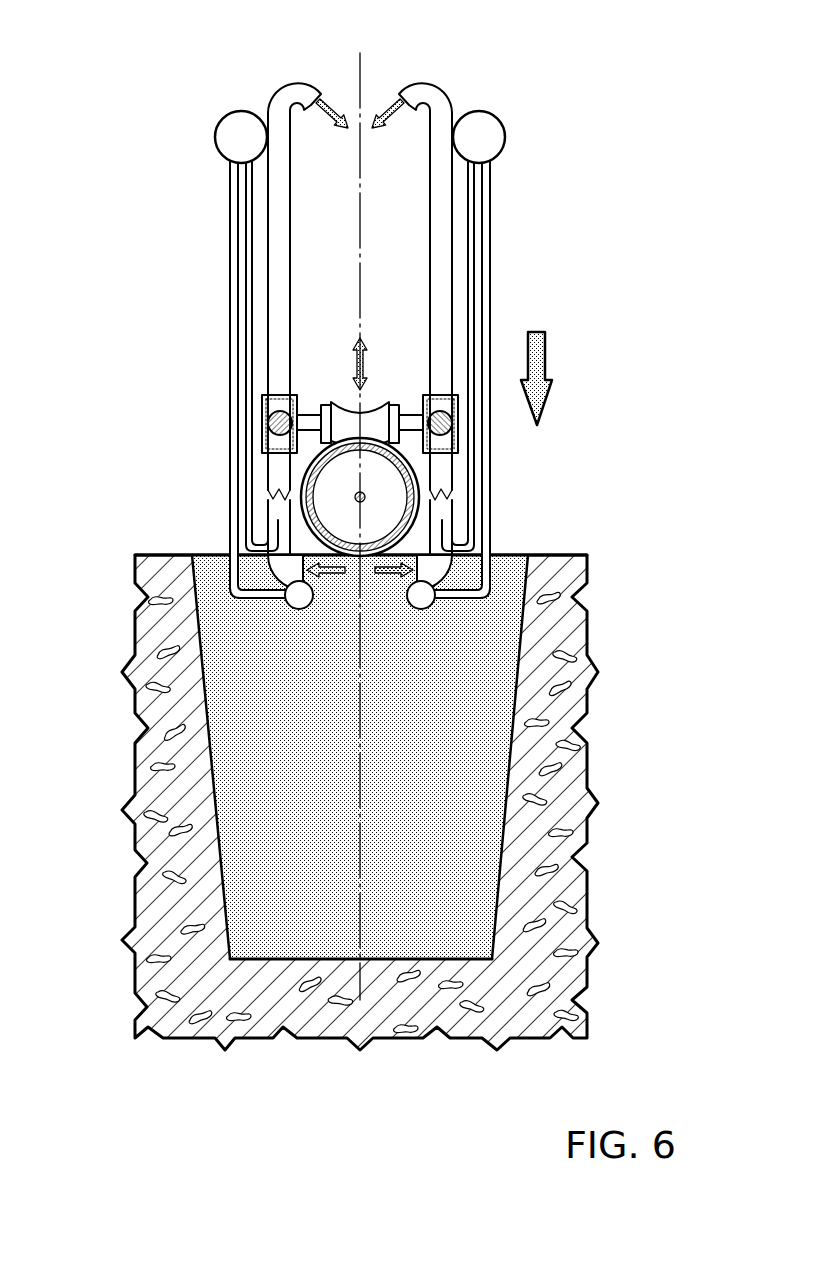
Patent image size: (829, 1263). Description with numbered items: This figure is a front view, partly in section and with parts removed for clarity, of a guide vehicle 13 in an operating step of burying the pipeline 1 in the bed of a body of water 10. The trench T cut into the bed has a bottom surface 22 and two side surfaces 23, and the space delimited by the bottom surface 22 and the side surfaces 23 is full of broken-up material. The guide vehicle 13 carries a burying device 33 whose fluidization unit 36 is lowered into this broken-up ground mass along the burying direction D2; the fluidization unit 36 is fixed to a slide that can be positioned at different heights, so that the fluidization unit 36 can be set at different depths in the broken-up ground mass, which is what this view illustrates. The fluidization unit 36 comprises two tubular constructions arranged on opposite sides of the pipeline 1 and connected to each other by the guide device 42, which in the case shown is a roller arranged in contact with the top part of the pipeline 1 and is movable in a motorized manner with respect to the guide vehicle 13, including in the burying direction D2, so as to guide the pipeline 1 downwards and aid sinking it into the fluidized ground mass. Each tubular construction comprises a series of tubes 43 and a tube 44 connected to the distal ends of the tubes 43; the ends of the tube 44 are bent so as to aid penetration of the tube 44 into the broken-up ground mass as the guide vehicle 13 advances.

The burying device 33 is at (477, 80).
The guide vehicle 13 is at (353, 335).
The fluidization unit 36 is at (221, 377).
The guide device 42 is at (374, 396).
The pipeline 1 is at (295, 477).
The burying direction D2 is at (548, 363).
The tubes 43 is at (292, 598).
The tube 44 is at (298, 606).
The side surfaces 23 is at (215, 686).
The trench T is at (278, 800).
The body of water 10 is at (527, 827).
The bottom surface 22 is at (333, 945).